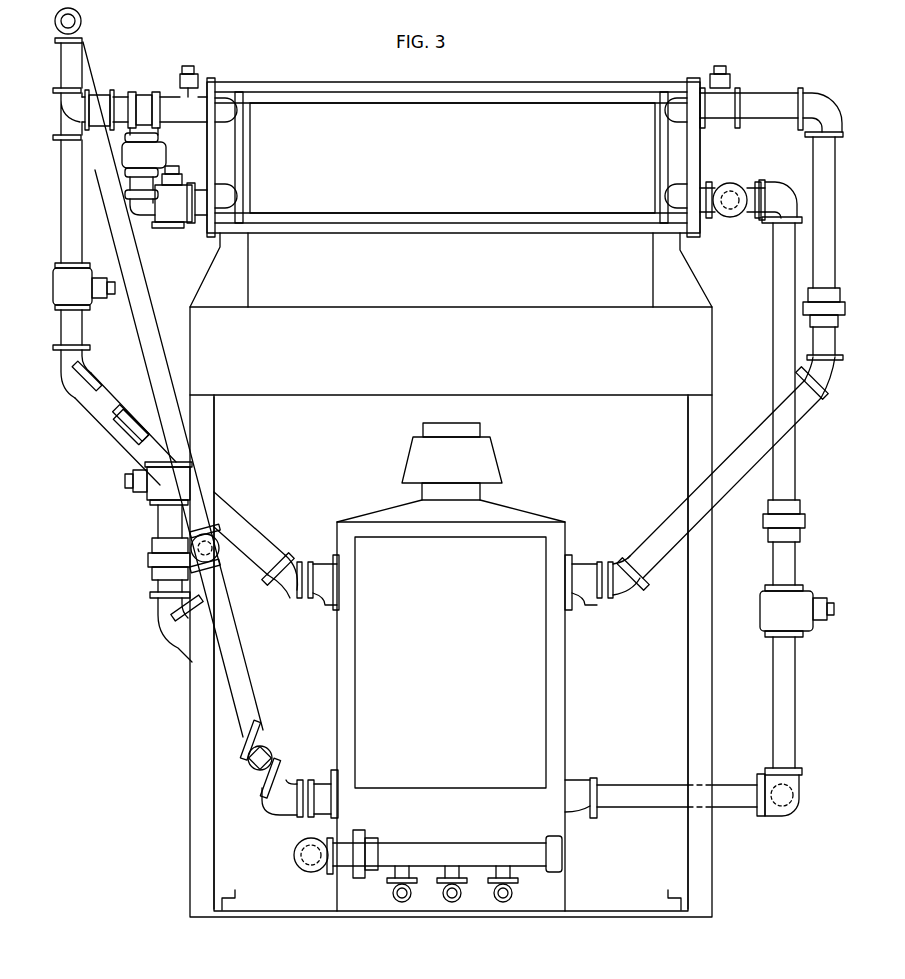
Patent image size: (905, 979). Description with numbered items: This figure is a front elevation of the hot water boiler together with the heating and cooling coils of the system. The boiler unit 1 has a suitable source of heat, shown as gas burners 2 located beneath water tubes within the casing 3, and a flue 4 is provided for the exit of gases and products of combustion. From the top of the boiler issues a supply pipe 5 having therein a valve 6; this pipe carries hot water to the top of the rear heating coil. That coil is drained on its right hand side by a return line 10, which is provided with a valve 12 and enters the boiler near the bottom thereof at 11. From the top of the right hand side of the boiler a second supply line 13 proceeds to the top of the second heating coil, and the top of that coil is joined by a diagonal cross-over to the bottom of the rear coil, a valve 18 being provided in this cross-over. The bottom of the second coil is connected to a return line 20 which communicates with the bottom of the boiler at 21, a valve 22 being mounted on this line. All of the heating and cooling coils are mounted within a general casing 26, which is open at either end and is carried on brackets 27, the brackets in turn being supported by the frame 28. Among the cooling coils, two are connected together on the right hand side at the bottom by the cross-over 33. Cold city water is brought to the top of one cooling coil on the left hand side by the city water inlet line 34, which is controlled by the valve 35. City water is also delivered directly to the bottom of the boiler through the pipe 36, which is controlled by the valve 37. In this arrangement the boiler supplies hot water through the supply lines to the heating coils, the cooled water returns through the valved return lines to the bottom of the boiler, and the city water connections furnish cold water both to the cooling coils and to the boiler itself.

The boiler unit 1 is at (565, 705).
The gas burners 2 is at (512, 886).
The casing 3 is at (565, 648).
The flue 4 is at (423, 426).
The supply pipe 5 is at (240, 516).
The valve 6 is at (92, 278).
The return line 10 is at (792, 470).
The return line entry point 11 is at (577, 778).
The valve 12 is at (806, 600).
The supply line 13 is at (745, 435).
The valve 18 is at (156, 156).
The return line 20 is at (155, 521).
The return line connection point 21 is at (326, 776).
The valve 22 is at (130, 477).
The general casing 26 is at (284, 82).
The brackets 27 is at (250, 263).
The frame 28 is at (216, 430).
The cross-over 33 is at (727, 182).
The city water inlet line 34 is at (82, 22).
The valve 35 is at (98, 94).
The pipe 36 is at (142, 312).
The valve 37 is at (222, 572).